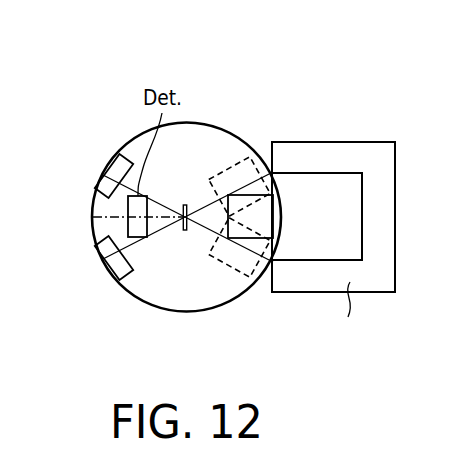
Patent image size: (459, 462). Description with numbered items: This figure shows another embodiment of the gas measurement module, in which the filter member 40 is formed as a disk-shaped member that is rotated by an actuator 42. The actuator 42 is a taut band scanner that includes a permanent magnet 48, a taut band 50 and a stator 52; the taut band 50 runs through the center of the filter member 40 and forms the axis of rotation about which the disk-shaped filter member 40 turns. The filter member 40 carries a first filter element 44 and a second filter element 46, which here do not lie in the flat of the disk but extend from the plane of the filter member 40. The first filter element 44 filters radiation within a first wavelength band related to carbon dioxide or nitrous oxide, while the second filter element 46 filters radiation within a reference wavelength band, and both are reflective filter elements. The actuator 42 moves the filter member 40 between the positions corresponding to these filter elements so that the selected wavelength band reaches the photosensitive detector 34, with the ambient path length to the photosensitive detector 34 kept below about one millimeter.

The photosensitive detector 34 is at (128, 211).
The filter member 40 is at (213, 143).
The actuator 42 is at (291, 81).
The first filter element 44 is at (109, 276).
The second filter element 46 is at (114, 161).
The permanent magnet 48 is at (276, 222).
The taut band 50 is at (184, 223).
The stator 52 is at (372, 155).